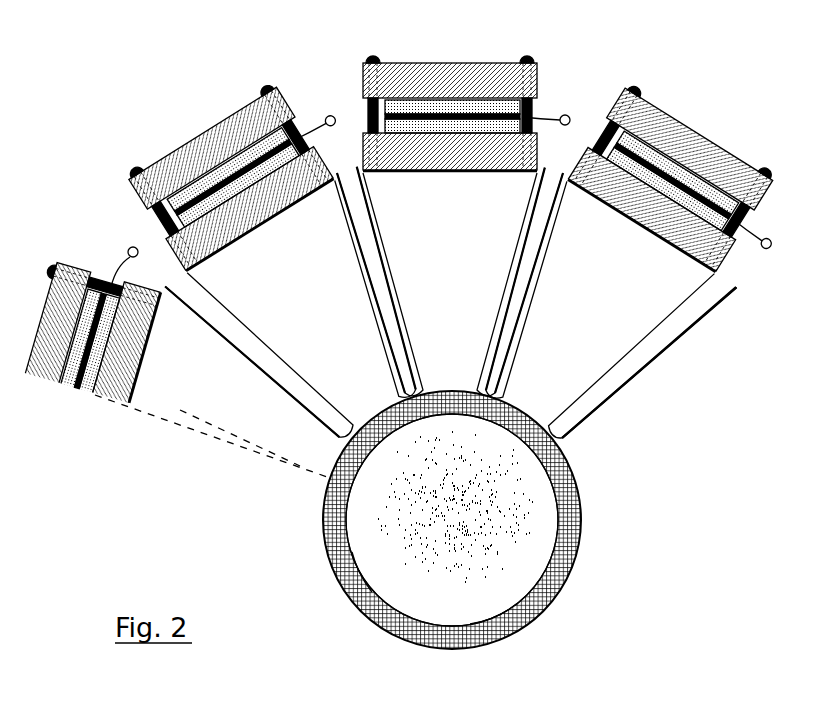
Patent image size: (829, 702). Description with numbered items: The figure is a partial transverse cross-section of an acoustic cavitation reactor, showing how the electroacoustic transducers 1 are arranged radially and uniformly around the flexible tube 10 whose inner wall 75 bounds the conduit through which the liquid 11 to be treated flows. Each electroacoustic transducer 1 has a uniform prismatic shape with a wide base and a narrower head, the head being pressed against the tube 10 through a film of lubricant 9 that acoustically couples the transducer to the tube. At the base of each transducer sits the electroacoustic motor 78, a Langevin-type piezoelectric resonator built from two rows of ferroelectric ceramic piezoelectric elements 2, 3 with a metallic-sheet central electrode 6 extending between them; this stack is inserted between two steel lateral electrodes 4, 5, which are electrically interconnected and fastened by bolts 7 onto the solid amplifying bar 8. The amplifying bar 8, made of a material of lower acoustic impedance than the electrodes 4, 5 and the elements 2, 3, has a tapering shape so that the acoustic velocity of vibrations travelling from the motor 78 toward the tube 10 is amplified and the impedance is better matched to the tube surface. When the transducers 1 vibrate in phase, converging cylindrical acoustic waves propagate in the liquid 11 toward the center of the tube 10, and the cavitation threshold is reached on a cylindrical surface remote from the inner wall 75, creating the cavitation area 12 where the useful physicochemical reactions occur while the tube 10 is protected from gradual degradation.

The electroacoustic transducer 1 is at (335, 87).
The piezoelectric elements 2 is at (405, 108).
The piezoelectric elements 3 is at (432, 127).
The lateral electrode 4 is at (463, 94).
The lateral electrode 5 is at (463, 164).
The central electrode 6 is at (566, 114).
The bolts 7 is at (527, 60).
The amplifying bar 8 is at (441, 265).
The film of lubricant 9 is at (556, 431).
The tube 10 is at (370, 573).
The liquid 11 is at (517, 531).
The cavitation area 12 is at (440, 504).
The inner wall 75 is at (490, 617).
The electroacoustic motor 78 is at (736, 292).